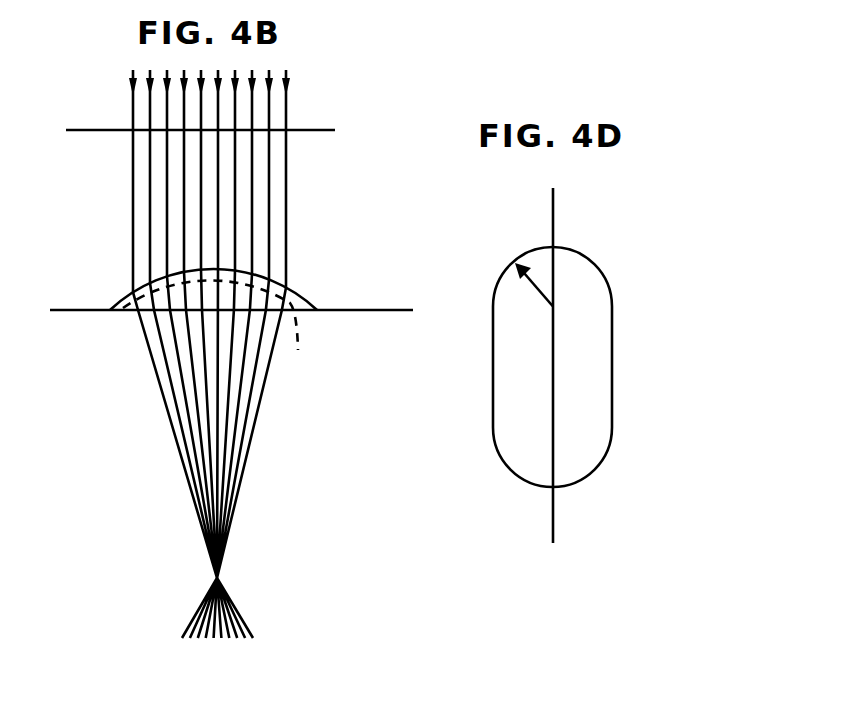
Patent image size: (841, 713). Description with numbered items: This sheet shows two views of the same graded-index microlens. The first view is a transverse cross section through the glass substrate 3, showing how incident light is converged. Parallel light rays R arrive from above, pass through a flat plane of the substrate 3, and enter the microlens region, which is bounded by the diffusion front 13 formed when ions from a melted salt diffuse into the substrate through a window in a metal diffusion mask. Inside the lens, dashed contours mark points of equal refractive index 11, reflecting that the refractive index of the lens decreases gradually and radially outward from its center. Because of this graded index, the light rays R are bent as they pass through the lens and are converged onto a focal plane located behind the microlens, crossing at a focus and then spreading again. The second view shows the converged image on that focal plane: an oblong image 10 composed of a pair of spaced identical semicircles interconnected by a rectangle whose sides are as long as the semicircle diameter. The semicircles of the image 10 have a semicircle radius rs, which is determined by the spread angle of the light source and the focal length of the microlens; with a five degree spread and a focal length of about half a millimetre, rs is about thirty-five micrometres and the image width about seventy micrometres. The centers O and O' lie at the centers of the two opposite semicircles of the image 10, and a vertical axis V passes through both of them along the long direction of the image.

In FIG. 4B, the glass substrate 3 is at (320, 150).
In FIG. 4B, the diffusion front 13 is at (288, 283).
In FIG. 4B, the points of equal refractive index 11 is at (224, 337).
In FIG. 4B, the light rays R is at (247, 447).
In FIG. 4D, the semicircle radius rs is at (529, 290).
In FIG. 4D, the center O is at (573, 306).
In FIG. 4D, the center O' is at (579, 428).
In FIG. 4D, the vertical axis V is at (553, 377).
In FIG. 4D, the oblong image 10 is at (612, 423).